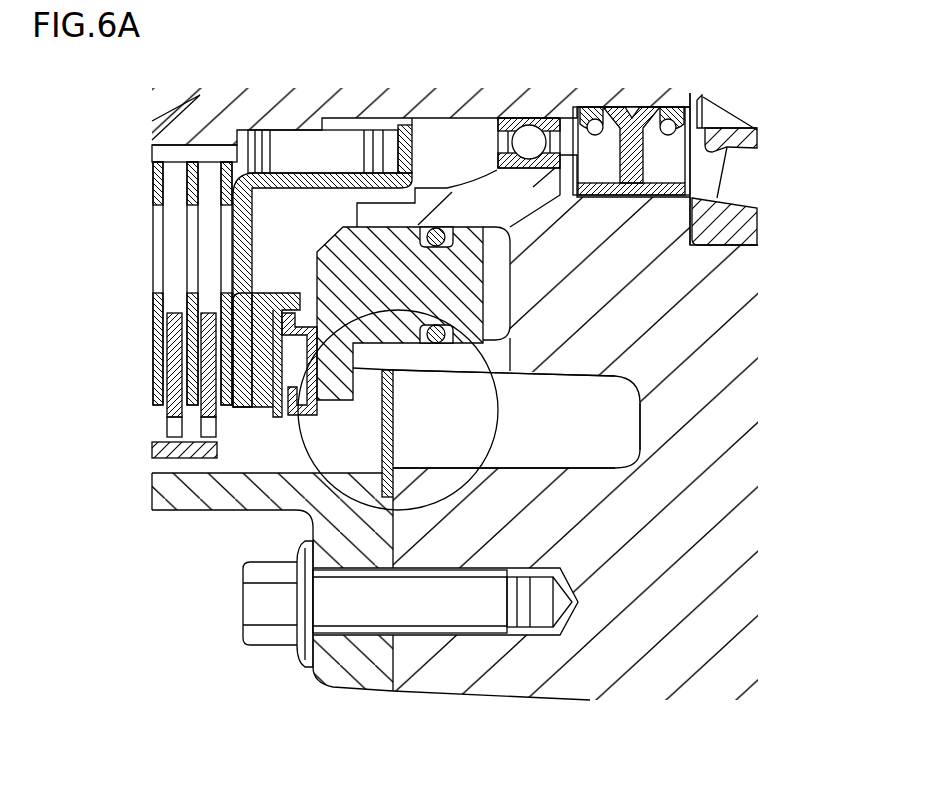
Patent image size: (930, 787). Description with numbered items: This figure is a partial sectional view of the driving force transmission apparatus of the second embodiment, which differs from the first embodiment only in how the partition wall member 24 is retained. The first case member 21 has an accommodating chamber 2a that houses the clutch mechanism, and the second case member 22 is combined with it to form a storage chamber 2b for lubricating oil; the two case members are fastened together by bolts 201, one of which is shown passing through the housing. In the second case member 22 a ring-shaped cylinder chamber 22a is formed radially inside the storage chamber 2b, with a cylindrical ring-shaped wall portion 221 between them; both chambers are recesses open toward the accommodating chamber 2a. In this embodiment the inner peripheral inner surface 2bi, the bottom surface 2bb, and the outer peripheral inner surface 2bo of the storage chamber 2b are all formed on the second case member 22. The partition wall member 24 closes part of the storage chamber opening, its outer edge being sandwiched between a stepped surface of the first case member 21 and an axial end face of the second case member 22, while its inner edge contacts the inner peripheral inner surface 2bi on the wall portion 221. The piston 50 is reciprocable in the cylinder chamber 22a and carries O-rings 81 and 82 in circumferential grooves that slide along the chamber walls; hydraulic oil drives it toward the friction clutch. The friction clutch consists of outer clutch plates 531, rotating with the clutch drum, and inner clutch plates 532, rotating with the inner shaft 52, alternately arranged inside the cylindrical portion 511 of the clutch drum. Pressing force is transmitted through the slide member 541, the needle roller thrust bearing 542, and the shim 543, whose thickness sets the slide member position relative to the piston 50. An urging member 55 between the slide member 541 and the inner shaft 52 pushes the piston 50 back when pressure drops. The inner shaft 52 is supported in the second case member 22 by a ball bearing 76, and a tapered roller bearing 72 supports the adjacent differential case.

The accommodating chamber 2a is at (236, 474).
The storage chamber 2b is at (620, 428).
The inner peripheral inner surface 2bi is at (540, 378).
The outer peripheral inner surface 2bo is at (513, 470).
The bottom surface 2bb is at (637, 438).
The first case member 21 is at (357, 690).
The second case member 22 is at (423, 692).
The cylinder chamber 22a is at (497, 275).
The partition wall member 24 is at (388, 441).
The piston 50 is at (400, 240).
The inner shaft 52 is at (218, 112).
The urging member 55 is at (312, 148).
The tapered roller bearing 72 is at (742, 178).
The ball bearing 76 is at (535, 143).
The O-ring 81 is at (627, 120).
The O-ring 82 is at (450, 227).
The bolt 201 is at (273, 647).
The ring-shaped wall portion 221 is at (300, 307).
The cylindrical portion 511 is at (170, 449).
The outer clutch plates 531 is at (157, 381).
The inner clutch plates 532 is at (162, 406).
The slide member 541 is at (345, 178).
The needle roller thrust bearing 542 is at (160, 327).
The shim 543 is at (250, 327).